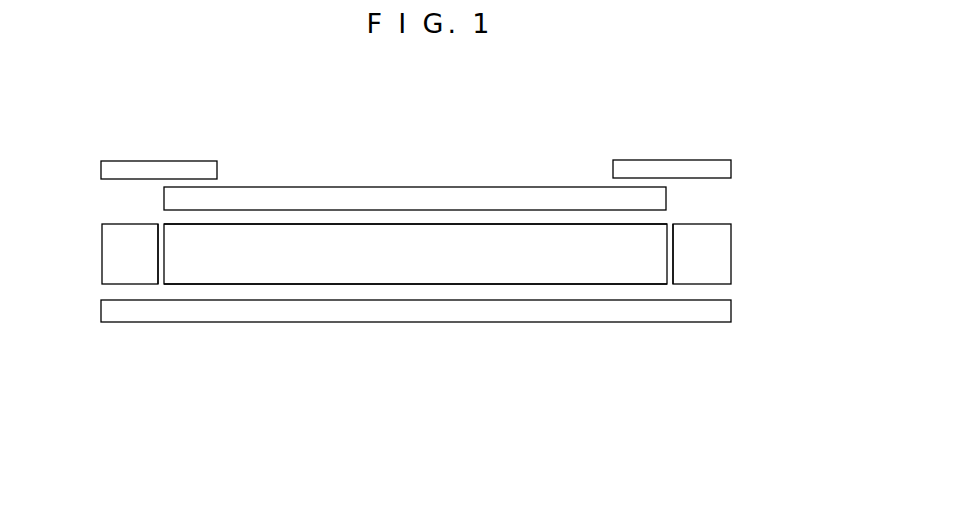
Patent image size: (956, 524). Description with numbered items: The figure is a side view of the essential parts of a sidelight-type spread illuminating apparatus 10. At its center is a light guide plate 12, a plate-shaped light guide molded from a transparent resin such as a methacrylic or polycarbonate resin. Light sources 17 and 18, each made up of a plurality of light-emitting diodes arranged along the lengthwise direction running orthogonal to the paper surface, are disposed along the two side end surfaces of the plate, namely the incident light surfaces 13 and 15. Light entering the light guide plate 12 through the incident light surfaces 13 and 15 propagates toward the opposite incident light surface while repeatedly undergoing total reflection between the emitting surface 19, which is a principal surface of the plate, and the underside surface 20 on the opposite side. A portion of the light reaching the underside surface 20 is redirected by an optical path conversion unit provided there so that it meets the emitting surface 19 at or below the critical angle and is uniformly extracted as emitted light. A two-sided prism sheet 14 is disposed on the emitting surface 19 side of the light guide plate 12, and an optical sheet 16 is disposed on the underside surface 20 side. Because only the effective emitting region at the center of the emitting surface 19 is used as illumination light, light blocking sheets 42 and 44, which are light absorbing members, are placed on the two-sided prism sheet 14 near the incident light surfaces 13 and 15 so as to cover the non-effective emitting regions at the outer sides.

The spread illuminating apparatus 10 is at (787, 350).
The light guide plate 12 is at (277, 270).
The incident light surface 13 is at (667, 238).
The two-sided prism sheet 14 is at (377, 200).
The incident light surface 15 is at (158, 242).
The optical sheet 16 is at (423, 310).
The light source 17 is at (710, 257).
The light source 18 is at (118, 258).
The emitting surface 19 is at (503, 225).
The underside surface 20 is at (611, 280).
The light blocking sheet 42 is at (683, 158).
The light blocking sheet 44 is at (152, 160).